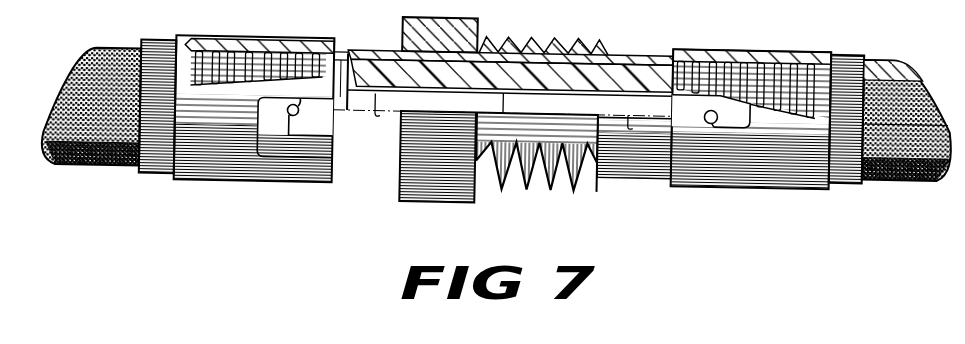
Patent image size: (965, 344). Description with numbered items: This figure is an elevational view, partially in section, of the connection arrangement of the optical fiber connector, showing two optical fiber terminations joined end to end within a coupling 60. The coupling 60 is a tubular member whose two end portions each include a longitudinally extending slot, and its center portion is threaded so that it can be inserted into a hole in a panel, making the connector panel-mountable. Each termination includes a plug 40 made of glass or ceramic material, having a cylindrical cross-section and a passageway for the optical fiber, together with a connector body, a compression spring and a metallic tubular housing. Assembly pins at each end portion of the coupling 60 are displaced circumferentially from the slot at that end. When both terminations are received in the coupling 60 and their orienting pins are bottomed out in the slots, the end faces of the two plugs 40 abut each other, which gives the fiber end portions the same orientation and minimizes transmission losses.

The plug 40 is at (505, 92).
The coupling 60 is at (378, 52).